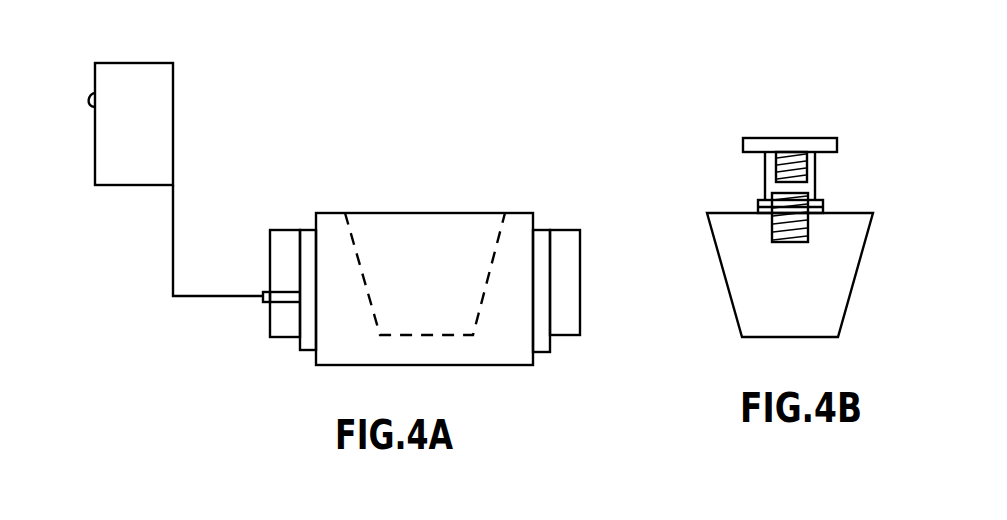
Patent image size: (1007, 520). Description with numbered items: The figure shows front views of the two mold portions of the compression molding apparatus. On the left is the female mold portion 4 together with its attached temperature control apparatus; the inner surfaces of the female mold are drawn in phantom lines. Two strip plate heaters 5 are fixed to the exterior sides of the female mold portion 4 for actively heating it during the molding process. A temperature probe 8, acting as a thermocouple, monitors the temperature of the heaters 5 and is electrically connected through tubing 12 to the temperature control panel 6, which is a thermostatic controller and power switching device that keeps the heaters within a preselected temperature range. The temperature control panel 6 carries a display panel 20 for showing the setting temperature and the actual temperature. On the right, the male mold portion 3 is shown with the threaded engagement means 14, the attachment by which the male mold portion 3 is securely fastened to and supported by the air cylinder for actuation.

In FIG. 4B, the male mold portion 3 is at (742, 270).
In FIG. 4A, the female mold portion 4 is at (331, 357).
In FIG. 4A, the strip plate heaters 5 is at (308, 232).
In FIG. 4A, the temperature control panel 6 is at (140, 143).
In FIG. 4A, the temperature probe 8 is at (265, 302).
In FIG. 4A, the tubing 12 is at (171, 240).
In FIG. 4B, the threaded engagement means 14 is at (772, 175).
In FIG. 4A, the display panel 20 is at (90, 100).